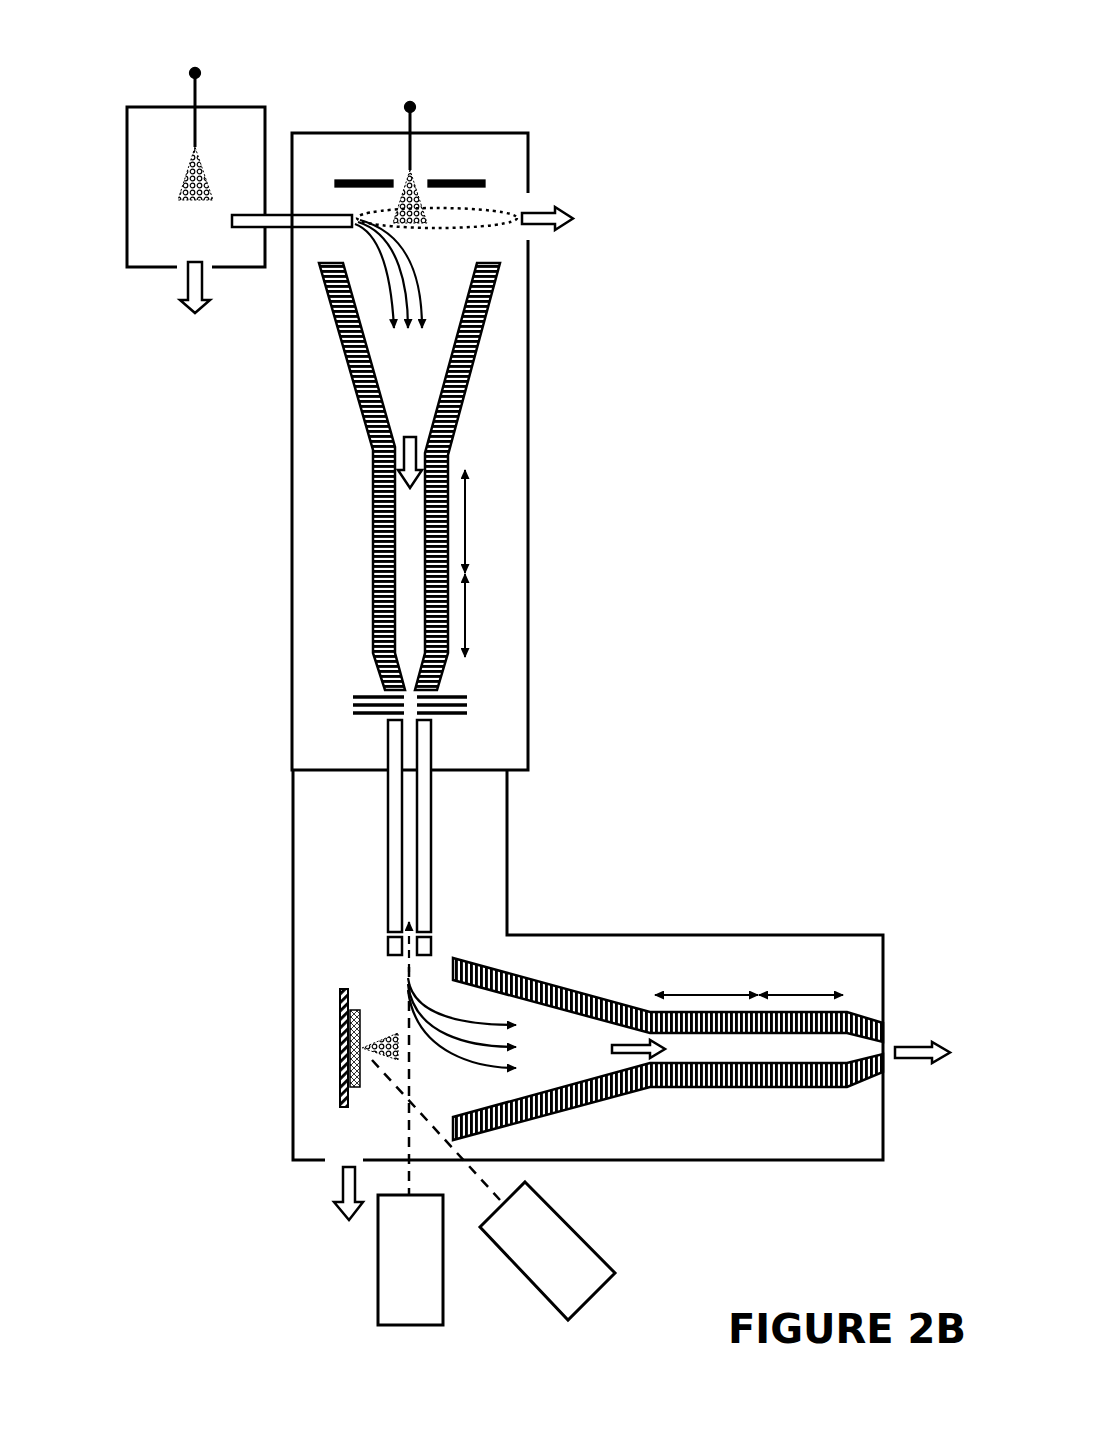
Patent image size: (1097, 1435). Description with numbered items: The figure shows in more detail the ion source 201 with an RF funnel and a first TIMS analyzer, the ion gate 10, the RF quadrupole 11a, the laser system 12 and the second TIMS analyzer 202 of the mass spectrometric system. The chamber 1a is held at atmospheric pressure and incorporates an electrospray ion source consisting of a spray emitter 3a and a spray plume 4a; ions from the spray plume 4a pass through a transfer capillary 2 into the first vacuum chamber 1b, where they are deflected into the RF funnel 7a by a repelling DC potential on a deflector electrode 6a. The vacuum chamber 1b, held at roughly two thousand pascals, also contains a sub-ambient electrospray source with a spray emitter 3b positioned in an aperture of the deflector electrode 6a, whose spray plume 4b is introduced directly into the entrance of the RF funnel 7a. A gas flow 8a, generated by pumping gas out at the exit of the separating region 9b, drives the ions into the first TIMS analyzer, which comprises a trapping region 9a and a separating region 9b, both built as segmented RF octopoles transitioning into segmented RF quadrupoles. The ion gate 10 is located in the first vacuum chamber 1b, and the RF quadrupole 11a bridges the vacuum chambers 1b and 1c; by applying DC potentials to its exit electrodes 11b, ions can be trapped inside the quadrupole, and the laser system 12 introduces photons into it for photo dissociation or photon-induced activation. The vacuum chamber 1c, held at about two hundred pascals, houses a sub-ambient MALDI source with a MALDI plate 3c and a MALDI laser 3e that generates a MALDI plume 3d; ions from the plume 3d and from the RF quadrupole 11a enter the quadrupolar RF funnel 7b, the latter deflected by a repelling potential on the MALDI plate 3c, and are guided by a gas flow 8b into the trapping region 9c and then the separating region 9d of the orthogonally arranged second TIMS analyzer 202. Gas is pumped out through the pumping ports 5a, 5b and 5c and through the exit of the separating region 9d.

The chamber 1a is at (162, 102).
The first vacuum chamber 1b is at (289, 669).
The vacuum chamber 1c is at (767, 1165).
The transfer capillary 2 is at (278, 213).
The spray emitter 3a is at (192, 122).
The spray emitter 3b is at (400, 120).
The MALDI plate 3c is at (330, 1050).
The MALDI plume 3d is at (390, 1032).
The MALDI laser 3e is at (592, 1243).
The spray plume 4a is at (175, 203).
The spray plume 4b is at (433, 208).
The pumping port 5a is at (180, 277).
The pumping port 5b is at (530, 242).
The pumping port 5c is at (328, 1172).
The deflector electrode 6a is at (377, 170).
The RF funnel 7a is at (480, 360).
The quadrupolar RF funnel 7b is at (505, 970).
The gas flow 8a is at (398, 450).
The gas flow 8b is at (618, 1038).
The trapping region 9a is at (490, 521).
The separating region 9b is at (491, 615).
The trapping region 9c is at (706, 978).
The separating region 9d is at (801, 978).
The ion gate 10 is at (345, 718).
The RF quadrupole 11a is at (388, 812).
The exit electrodes 11b is at (383, 942).
The laser system 12 is at (373, 1297).
The ion source 201 is at (622, 175).
The TIMS analyzer 202 is at (703, 802).